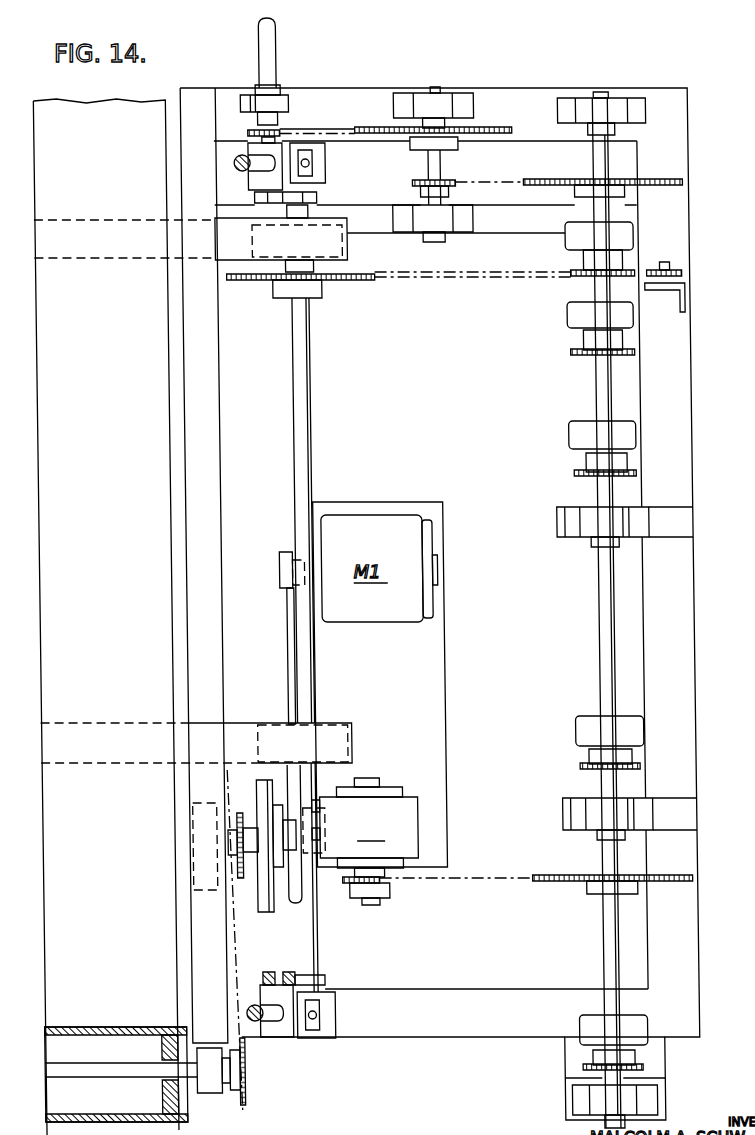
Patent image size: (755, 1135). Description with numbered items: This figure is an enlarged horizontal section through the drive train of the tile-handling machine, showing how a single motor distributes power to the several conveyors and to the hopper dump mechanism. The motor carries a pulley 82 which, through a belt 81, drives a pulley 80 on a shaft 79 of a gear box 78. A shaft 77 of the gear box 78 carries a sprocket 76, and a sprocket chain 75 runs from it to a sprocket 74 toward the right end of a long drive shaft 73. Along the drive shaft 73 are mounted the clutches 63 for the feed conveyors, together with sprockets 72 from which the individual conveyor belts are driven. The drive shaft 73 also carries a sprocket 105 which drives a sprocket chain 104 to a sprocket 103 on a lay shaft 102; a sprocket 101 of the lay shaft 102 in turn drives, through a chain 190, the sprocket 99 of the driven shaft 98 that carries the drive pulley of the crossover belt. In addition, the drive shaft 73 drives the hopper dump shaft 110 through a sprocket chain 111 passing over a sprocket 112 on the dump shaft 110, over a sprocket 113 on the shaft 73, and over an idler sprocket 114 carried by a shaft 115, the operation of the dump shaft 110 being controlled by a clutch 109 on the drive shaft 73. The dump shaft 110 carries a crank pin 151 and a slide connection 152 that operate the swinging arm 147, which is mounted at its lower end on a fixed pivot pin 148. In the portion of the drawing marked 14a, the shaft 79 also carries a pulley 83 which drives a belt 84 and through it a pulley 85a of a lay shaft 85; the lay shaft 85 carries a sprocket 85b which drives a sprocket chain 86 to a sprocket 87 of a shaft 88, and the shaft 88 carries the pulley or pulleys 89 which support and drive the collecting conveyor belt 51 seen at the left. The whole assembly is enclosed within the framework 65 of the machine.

The section line 14a is at (234, 754).
The collecting conveyor belt 51 is at (106, 894).
The clutch 63 is at (566, 312).
The frame 65 is at (685, 597).
The sprocket 72 is at (567, 352).
The drive shaft 73 is at (592, 368).
The sprocket 74 is at (560, 882).
The sprocket chain 75 is at (458, 877).
The sprocket 76 is at (380, 883).
The shaft 77 is at (358, 897).
The gear box 78 is at (368, 823).
The shaft 79 is at (305, 805).
The pulley 80 is at (263, 905).
The belt 81 is at (278, 668).
The pulley 82 is at (272, 568).
The pulley 83 is at (247, 800).
The belt 84 is at (261, 805).
The lay shaft 85 is at (232, 808).
The pulley 85a is at (246, 915).
The sprocket 85b is at (221, 828).
The sprocket chain 86 is at (225, 972).
The sprocket 87 is at (232, 1095).
The shaft 88 is at (104, 1073).
The pulley 89 is at (176, 1106).
The driven shaft 98 is at (270, 64).
The sprocket 99 is at (278, 130).
The sprocket 101 is at (480, 130).
The lay shaft 102 is at (440, 176).
The sprocket 103 is at (408, 184).
The sprocket chain 104 is at (507, 178).
The sprocket 105 is at (649, 178).
The clutch 109 is at (565, 238).
The hopper dump shaft 110 is at (305, 367).
The sprocket chain 111 is at (476, 275).
The sprocket 112 is at (259, 282).
The sprocket 113 is at (571, 276).
The idler sprocket 114 is at (641, 288).
The shaft 115 is at (660, 262).
The swinging arm 147 is at (240, 155).
The fixed pivot pin 148 is at (321, 182).
The crank pin 151 is at (249, 197).
The slide connection 152 is at (260, 176).
The chain 190 is at (338, 130).